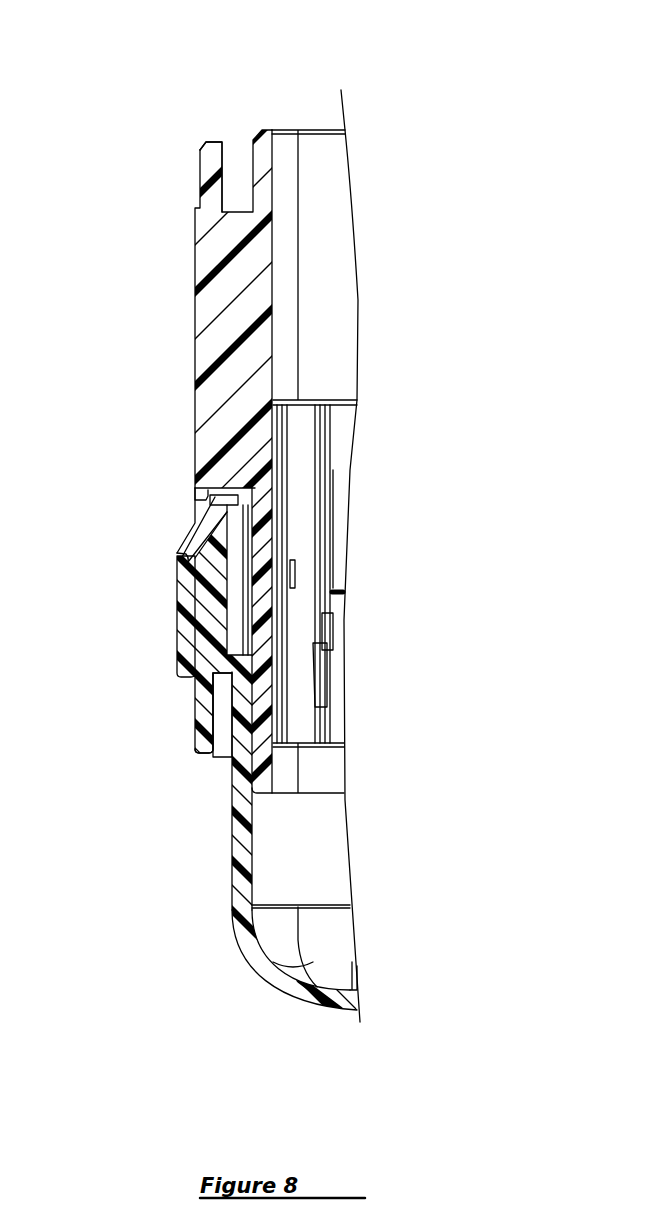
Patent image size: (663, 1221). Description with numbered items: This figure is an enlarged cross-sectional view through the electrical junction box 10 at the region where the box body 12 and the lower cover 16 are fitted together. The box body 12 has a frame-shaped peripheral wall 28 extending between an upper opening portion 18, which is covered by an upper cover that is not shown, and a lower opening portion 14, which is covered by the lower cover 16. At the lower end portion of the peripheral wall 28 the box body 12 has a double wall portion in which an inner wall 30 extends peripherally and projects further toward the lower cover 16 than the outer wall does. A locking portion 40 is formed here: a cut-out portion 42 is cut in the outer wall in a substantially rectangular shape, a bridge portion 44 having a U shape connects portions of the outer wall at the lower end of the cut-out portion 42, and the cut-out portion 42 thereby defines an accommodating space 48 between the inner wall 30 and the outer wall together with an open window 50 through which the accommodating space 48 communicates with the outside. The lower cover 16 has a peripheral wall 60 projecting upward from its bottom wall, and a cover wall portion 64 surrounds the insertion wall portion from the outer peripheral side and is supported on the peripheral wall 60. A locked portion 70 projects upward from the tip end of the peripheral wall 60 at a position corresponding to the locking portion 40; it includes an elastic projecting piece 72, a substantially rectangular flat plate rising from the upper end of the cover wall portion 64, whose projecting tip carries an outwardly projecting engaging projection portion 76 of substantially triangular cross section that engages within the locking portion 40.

The electrical junction box 10 is at (262, 45).
The box body 12 is at (166, 243).
The lower opening portion 14 is at (212, 857).
The lower cover 16 is at (232, 970).
The upper opening portion 18 is at (236, 108).
The peripheral wall 28 is at (227, 375).
The inner wall 30 is at (265, 635).
The locking portion 40 is at (157, 688).
The cut-out portion 42 is at (207, 493).
The bridge portion 44 is at (185, 632).
The accommodating space 48 is at (237, 550).
The open window 50 is at (187, 565).
The peripheral wall 60 is at (242, 835).
The cover wall portion 64 is at (207, 717).
The locked portion 70 is at (148, 542).
The elastic projecting piece 72 is at (213, 612).
The engaging projection portion 76 is at (197, 550).